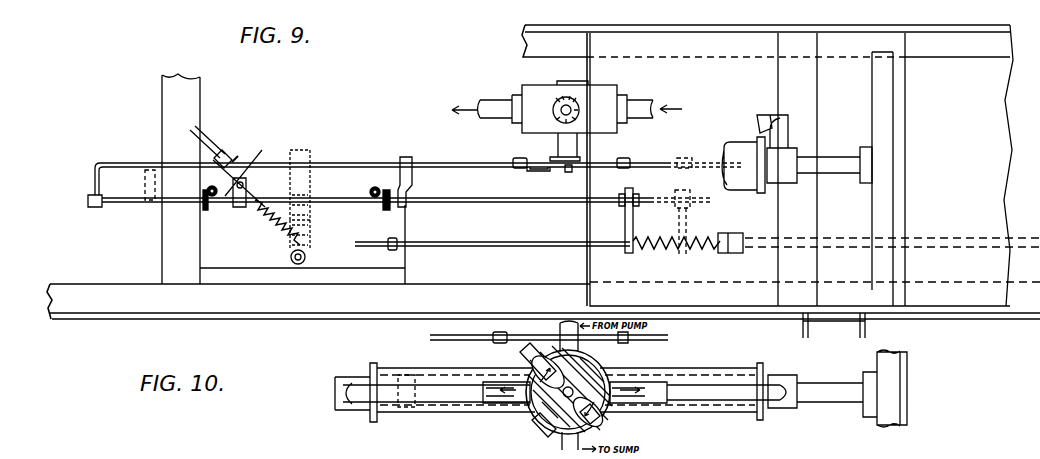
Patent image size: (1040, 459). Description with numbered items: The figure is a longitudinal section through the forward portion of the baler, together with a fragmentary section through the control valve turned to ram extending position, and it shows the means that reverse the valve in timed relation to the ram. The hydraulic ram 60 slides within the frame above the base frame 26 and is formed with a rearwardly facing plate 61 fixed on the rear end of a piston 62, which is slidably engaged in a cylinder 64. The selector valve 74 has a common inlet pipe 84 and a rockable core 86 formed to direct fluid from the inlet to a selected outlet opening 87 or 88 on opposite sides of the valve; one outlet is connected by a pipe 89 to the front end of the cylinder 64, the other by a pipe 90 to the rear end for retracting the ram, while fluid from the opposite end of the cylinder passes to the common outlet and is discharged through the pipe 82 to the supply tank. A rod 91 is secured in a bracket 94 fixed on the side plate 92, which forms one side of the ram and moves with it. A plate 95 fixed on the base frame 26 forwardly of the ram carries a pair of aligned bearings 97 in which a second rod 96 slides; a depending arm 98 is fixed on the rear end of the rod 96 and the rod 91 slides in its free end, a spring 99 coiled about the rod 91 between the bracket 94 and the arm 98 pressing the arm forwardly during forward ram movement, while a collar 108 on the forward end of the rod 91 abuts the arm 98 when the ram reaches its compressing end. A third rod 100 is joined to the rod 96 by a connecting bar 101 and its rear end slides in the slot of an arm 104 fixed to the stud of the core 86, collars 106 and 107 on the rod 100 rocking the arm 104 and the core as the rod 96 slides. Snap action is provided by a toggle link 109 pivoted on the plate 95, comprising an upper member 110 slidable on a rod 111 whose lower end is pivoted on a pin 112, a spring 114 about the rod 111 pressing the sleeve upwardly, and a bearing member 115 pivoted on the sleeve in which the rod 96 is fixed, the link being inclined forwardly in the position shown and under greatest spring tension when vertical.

In FIG. 9, the base frame 26 is at (163, 305).
In FIG. 9, the hydraulic ram 60 is at (866, 140).
In FIG. 10, the hydraulic ram 60 is at (860, 411).
In FIG. 9, the rearwardly facing plate 61 is at (895, 67).
In FIG. 9, the piston 62 is at (845, 177).
In FIG. 10, the cylinder 64 is at (790, 376).
In FIG. 9, the selector valve 74 is at (530, 90).
In FIG. 10, the selector valve 74 is at (604, 370).
In FIG. 10, the pipe 82 is at (562, 448).
In FIG. 10, the common inlet pipe 84 is at (562, 332).
In FIG. 10, the rockable core 86 is at (540, 422).
In FIG. 10, the outlet opening 87 is at (520, 365).
In FIG. 10, the outlet opening 88 is at (610, 415).
In FIG. 9, the pipe 89 is at (648, 105).
In FIG. 10, the pipe 89 is at (740, 402).
In FIG. 9, the pipe 90 is at (490, 105).
In FIG. 10, the pipe 90 is at (398, 400).
In FIG. 9, the rod 91 is at (560, 243).
In FIG. 9, the side plate 92 is at (770, 210).
In FIG. 9, the bracket 94 is at (735, 233).
In FIG. 9, the plate 95 is at (405, 222).
In FIG. 9, the second rod 96 is at (478, 200).
In FIG. 9, the bearings 97 is at (207, 211).
In FIG. 9, the depending arm 98 is at (632, 220).
In FIG. 9, the spring 99 is at (678, 250).
In FIG. 9, the third rod 100 is at (352, 160).
In FIG. 10, the third rod 100 is at (432, 342).
In FIG. 9, the connecting bar 101 is at (92, 183).
In FIG. 9, the arm 104 is at (550, 150).
In FIG. 10, the arm 104 is at (495, 332).
In FIG. 9, the collar 106 is at (515, 158).
In FIG. 9, the collar 107 is at (625, 160).
In FIG. 9, the collar 108 is at (386, 250).
In FIG. 9, the toggle link 109 is at (237, 158).
In FIG. 9, the upper member 110 is at (220, 155).
In FIG. 9, the rod 111 is at (193, 134).
In FIG. 9, the pin 112 is at (306, 257).
In FIG. 9, the spring 114 is at (270, 238).
In FIG. 9, the bearing member 115 is at (245, 165).